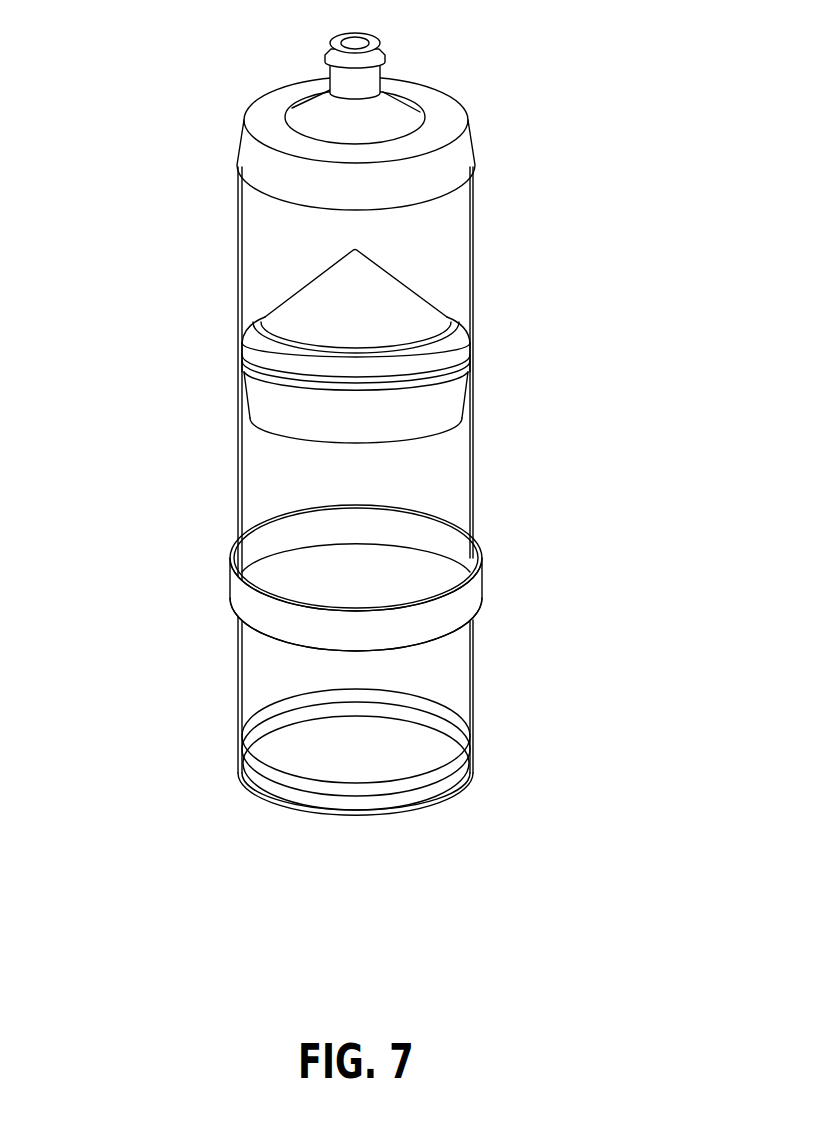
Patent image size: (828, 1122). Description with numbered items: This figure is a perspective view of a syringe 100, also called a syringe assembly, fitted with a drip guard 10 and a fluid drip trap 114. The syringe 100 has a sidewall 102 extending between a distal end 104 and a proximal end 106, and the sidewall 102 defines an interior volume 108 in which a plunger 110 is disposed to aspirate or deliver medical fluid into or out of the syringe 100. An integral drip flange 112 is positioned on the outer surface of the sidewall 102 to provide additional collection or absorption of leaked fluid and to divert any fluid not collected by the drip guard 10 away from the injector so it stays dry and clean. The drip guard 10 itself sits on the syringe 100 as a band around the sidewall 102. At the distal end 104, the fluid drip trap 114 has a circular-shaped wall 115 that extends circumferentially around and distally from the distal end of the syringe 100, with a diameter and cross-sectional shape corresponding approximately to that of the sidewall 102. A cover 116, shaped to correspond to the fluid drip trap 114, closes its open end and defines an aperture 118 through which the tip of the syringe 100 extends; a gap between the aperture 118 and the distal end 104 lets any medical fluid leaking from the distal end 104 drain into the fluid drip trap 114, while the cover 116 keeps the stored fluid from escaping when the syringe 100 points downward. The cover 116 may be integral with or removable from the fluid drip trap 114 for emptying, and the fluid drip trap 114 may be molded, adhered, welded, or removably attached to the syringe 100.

The syringe 100 is at (362, 407).
The sidewall 102 is at (275, 492).
The distal end 104 is at (382, 116).
The proximal end 106 is at (472, 755).
The interior volume 108 is at (428, 473).
The plunger 110 is at (262, 340).
The integral drip flange 112 is at (472, 663).
The fluid drip trap 114 is at (347, 105).
The circular-shaped wall 115 is at (459, 157).
The cover 116 is at (270, 110).
The aperture 118 is at (327, 142).
The drip guard 10 is at (242, 598).